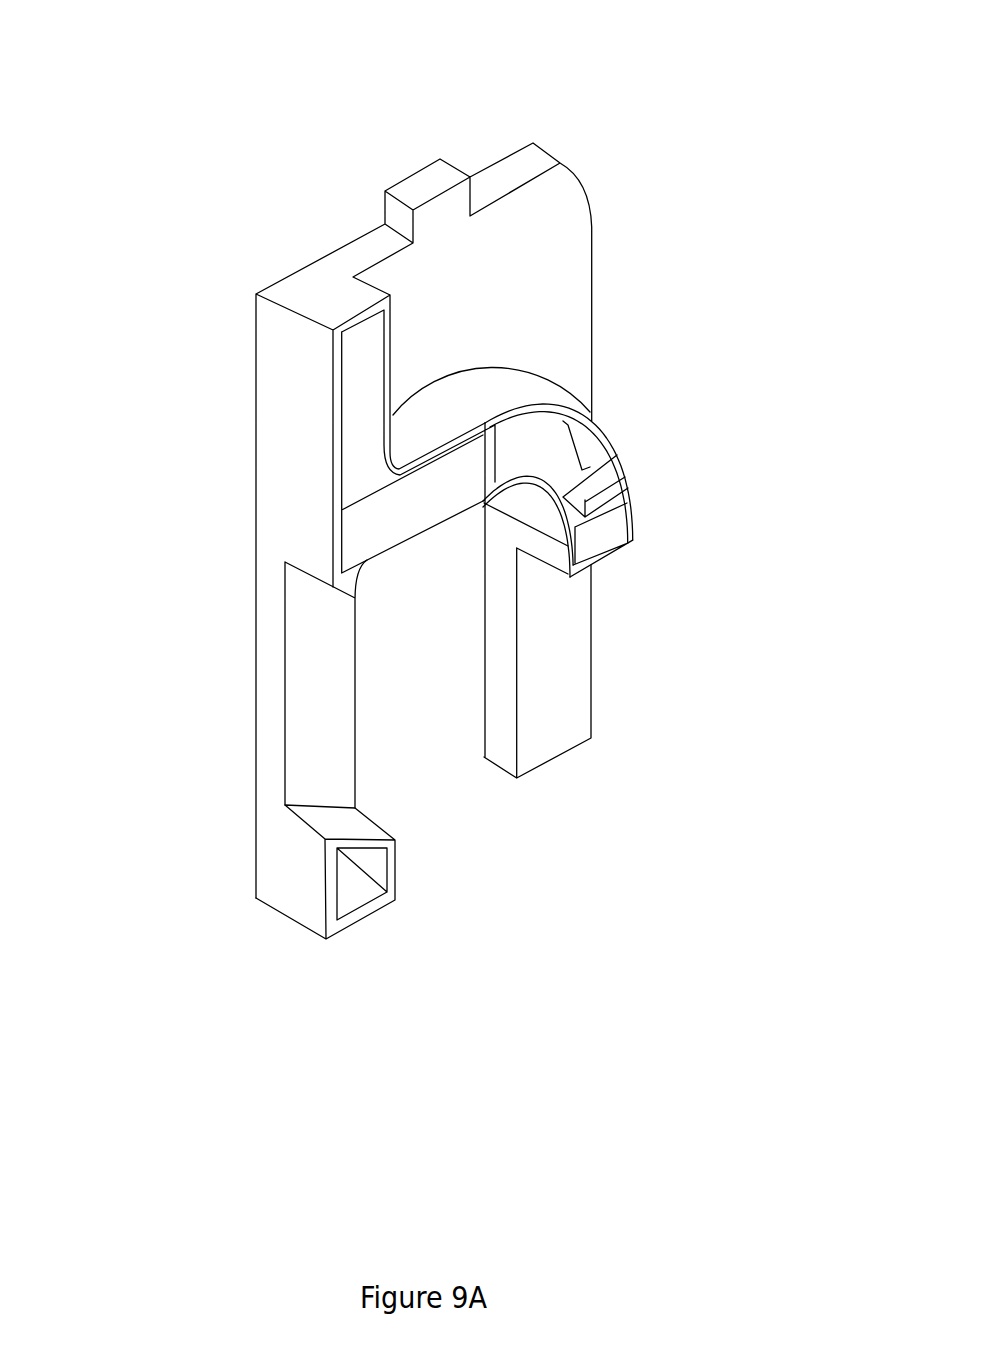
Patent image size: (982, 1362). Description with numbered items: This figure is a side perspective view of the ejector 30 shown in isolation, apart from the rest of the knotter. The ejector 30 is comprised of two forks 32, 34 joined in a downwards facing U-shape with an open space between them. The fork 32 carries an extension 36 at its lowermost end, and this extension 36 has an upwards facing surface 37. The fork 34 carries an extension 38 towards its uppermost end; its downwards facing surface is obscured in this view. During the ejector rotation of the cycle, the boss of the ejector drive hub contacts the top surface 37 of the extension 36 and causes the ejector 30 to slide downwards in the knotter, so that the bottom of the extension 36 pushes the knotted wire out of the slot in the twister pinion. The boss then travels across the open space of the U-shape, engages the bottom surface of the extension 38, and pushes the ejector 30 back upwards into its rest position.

The ejector 30 is at (662, 94).
The fork 32 is at (305, 693).
The fork 34 is at (558, 665).
The extension 36 is at (348, 922).
The upwards facing surface 37 is at (358, 820).
The extension 38 is at (625, 470).